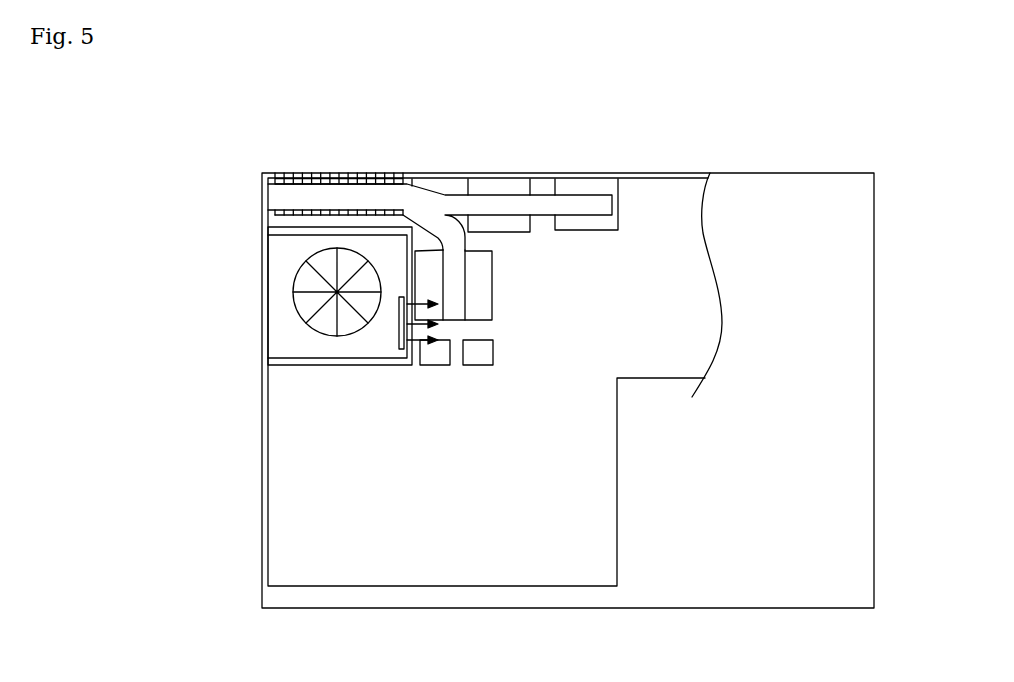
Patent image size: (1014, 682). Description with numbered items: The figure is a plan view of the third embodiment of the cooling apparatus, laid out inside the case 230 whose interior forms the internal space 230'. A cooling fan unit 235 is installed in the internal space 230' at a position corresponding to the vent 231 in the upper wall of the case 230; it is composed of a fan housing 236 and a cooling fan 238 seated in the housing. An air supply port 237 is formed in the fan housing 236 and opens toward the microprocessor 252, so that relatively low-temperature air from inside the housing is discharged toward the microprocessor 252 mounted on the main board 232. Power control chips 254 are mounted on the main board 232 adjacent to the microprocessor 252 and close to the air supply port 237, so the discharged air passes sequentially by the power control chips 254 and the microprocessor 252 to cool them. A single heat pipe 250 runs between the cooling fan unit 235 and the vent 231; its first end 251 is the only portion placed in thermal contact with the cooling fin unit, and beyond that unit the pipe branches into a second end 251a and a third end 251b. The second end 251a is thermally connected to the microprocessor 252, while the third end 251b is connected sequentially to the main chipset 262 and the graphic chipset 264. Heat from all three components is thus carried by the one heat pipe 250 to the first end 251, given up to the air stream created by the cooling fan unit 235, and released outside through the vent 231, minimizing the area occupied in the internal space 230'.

The case 230 is at (568, 351).
The internal space 230' is at (762, 440).
The vent 231 is at (362, 178).
The main board 232 is at (648, 208).
The cooling fan unit 235 is at (248, 292).
The fan housing 236 is at (277, 248).
The air supply port 237 is at (402, 320).
The cooling fan 238 is at (300, 305).
The heat pipe 250 is at (268, 190).
The first end 251 is at (310, 197).
The second end 251a is at (457, 270).
The third end 251b is at (541, 203).
The microprocessor 252 is at (482, 294).
The power control chips 254 is at (435, 350).
The main chipset 262 is at (497, 187).
The graphic chipset 264 is at (583, 187).